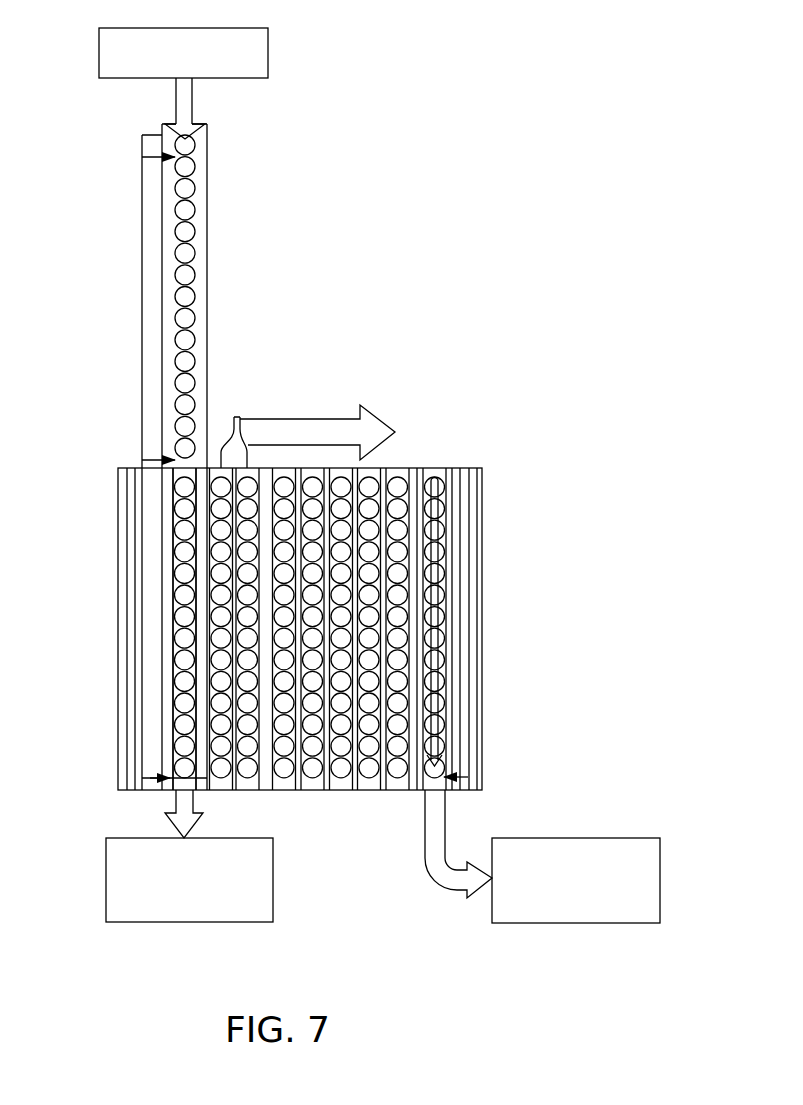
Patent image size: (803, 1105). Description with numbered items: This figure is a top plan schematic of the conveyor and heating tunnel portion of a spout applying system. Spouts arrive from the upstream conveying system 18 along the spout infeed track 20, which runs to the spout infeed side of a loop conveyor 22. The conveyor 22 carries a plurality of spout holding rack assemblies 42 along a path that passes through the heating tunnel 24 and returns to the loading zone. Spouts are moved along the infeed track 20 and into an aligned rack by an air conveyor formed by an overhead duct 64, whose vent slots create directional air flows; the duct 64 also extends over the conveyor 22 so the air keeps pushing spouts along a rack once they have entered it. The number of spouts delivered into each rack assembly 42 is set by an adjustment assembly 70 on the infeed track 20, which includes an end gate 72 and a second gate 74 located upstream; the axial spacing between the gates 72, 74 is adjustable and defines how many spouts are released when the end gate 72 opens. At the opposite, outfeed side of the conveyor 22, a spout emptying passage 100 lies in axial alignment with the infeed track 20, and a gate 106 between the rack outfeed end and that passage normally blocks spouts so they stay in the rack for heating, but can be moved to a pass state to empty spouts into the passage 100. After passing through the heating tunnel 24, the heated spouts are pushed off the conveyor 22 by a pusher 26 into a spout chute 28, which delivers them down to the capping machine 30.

The conveying system 18 is at (268, 48).
The spout infeed track 20 is at (211, 224).
The conveyor 22 is at (117, 536).
The heating tunnel 24 is at (410, 792).
The pusher 26 is at (443, 598).
The spout chute 28 is at (444, 882).
The capping machine 30 is at (600, 894).
The spout holding rack assembly 42 is at (142, 647).
The overhead duct 64 is at (208, 282).
The adjustment assembly 70 is at (140, 281).
The end gate 72 is at (147, 460).
The gate 74 is at (146, 157).
The spout emptying passage 100 is at (210, 894).
The gate 106 is at (147, 778).